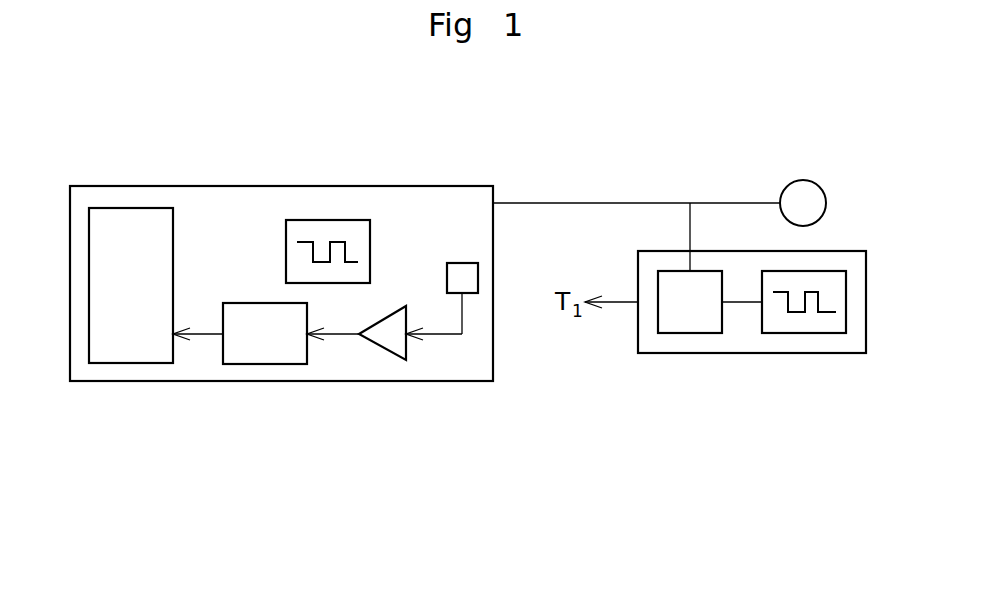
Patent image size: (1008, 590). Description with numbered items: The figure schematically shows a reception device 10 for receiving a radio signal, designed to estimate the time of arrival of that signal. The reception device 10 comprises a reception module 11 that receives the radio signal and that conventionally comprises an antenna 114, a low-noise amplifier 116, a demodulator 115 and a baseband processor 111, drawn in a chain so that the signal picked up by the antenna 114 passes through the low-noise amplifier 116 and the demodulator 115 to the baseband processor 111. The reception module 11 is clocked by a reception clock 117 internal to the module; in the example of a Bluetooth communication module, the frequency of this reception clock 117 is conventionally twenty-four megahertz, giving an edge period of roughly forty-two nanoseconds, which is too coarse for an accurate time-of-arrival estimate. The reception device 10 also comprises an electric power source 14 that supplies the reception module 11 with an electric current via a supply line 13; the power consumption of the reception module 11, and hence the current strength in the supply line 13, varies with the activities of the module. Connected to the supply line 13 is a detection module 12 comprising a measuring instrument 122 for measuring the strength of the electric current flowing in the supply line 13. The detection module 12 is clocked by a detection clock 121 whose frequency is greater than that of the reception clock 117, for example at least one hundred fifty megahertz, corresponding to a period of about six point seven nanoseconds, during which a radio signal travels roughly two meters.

The reception device 10 is at (232, 118).
The reception module 11 is at (334, 381).
The baseband processor 111 is at (115, 208).
The antenna 114 is at (462, 263).
The demodulator 115 is at (265, 364).
The low-noise amplifier 116 is at (380, 360).
The reception clock 117 is at (332, 220).
The detection module 12 is at (750, 353).
The detection clock 121 is at (812, 333).
The measuring instrument 122 is at (690, 333).
The supply line 13 is at (592, 203).
The electric power source 14 is at (803, 180).